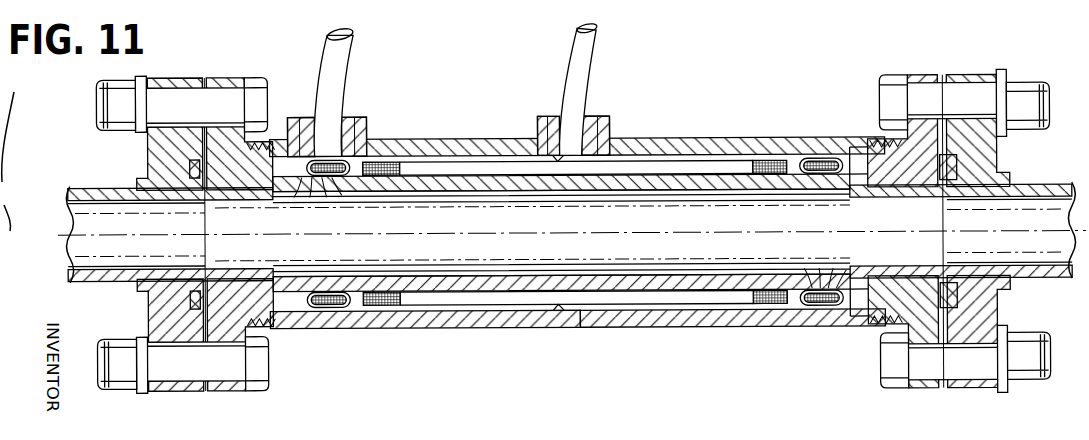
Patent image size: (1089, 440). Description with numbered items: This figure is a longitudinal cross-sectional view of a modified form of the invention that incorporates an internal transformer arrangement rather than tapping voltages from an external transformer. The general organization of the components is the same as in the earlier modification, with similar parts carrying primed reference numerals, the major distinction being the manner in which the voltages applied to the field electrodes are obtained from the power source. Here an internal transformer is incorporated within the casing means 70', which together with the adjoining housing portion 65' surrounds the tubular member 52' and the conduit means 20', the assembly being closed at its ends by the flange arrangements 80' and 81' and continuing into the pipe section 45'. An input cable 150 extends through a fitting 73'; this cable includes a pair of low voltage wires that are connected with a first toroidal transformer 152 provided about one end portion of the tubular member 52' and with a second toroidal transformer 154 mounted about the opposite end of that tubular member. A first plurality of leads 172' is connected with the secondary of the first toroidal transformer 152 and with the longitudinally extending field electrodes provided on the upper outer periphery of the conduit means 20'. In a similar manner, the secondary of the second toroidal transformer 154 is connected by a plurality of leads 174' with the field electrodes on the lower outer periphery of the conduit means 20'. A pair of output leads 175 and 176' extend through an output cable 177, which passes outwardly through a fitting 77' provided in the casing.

The conduit means 20' is at (458, 233).
The pipe 45' is at (963, 230).
The tubular member 52' is at (562, 233).
The housing 65' is at (413, 210).
The casing means 70' is at (740, 210).
The fitting 73' is at (351, 117).
The fitting 77' is at (598, 117).
The flange assembly 80' is at (185, 214).
The flange assembly 81' is at (959, 211).
The input cable 150 is at (363, 64).
The first toroidal transformer 152 is at (345, 312).
The second toroidal transformer 154 is at (820, 158).
The first plurality of leads 172' is at (347, 211).
The plurality of leads 174' is at (810, 275).
The output lead 175 is at (553, 166).
The output lead 176' is at (577, 232).
The output cable 177 is at (605, 61).